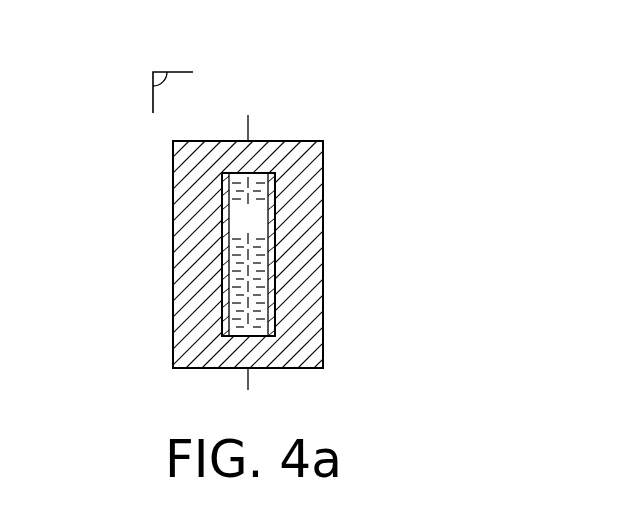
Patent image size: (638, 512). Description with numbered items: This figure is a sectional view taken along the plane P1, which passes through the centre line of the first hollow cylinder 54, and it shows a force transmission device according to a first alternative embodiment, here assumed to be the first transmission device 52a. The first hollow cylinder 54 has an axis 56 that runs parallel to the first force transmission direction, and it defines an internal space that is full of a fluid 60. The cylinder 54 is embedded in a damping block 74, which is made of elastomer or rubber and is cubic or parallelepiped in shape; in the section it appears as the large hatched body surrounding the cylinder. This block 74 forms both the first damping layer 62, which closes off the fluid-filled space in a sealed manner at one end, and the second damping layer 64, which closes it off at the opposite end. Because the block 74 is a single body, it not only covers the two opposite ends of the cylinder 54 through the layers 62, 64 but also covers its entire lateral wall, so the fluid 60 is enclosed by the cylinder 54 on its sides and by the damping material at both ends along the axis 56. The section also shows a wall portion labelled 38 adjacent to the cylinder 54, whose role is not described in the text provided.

The section plane P1 is at (153, 72).
The liner inner wall 38 is at (231, 181).
The first transmission device 52a is at (341, 120).
The first hollow cylinder 54 is at (273, 233).
The axis 56 is at (247, 383).
The fluid 60 is at (262, 228).
The first damping layer 62 is at (265, 141).
The second damping layer 64 is at (258, 355).
The damping block 74 is at (165, 255).